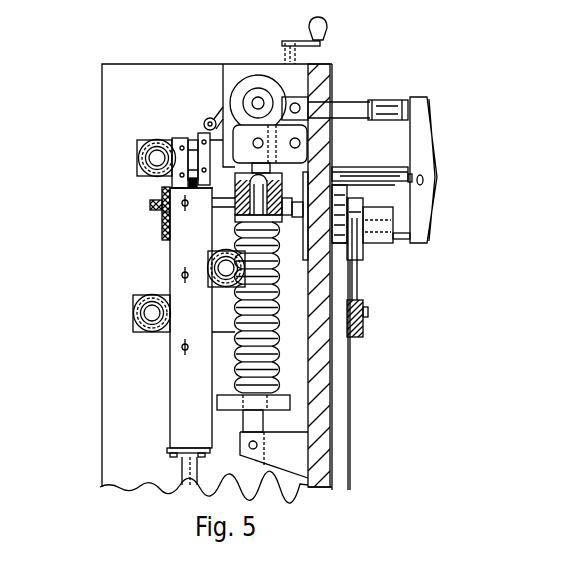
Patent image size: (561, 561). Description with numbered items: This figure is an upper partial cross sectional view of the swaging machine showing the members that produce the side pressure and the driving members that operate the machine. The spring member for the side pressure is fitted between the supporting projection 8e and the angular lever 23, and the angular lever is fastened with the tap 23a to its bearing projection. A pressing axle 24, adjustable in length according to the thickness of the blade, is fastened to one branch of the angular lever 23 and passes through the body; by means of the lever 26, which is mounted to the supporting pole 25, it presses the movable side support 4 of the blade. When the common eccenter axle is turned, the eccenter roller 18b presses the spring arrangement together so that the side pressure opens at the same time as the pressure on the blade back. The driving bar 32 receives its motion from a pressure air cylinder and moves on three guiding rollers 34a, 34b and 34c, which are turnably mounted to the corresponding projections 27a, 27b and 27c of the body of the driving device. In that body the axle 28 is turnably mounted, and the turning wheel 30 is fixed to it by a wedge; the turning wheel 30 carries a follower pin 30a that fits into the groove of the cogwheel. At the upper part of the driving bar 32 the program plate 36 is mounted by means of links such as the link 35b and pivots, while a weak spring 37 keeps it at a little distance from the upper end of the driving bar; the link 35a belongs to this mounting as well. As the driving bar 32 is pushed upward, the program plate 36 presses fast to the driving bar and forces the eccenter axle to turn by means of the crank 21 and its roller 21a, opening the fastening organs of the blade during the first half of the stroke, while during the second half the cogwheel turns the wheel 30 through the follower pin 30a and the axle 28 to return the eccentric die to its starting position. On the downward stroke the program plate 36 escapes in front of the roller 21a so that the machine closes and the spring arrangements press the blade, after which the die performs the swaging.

The program plate 36 is at (202, 128).
The roller 21a is at (204, 130).
The crank 21 is at (211, 118).
The eccenter roller 18b is at (273, 99).
The pressing axle 24 is at (346, 106).
The guide piece 35a is at (192, 136).
The guiding roller 34a is at (158, 141).
The projection 27a is at (139, 160).
The angular lever 23 is at (305, 141).
The tap 23a is at (308, 148).
The supporting pole 25 is at (398, 170).
The lever 26 is at (430, 203).
The link 35b is at (188, 182).
The weak spring 37 is at (153, 202).
The follower pin 30a is at (148, 210).
The turning wheel 30 is at (166, 239).
The projection 27c is at (212, 249).
The guiding roller 34c is at (210, 283).
The axle 28 is at (285, 216).
The movable side support 4 is at (400, 243).
The projection 27b is at (143, 328).
The guiding roller 34b is at (152, 335).
The driving bar 32 is at (193, 418).
The supporting projection 8e is at (293, 468).